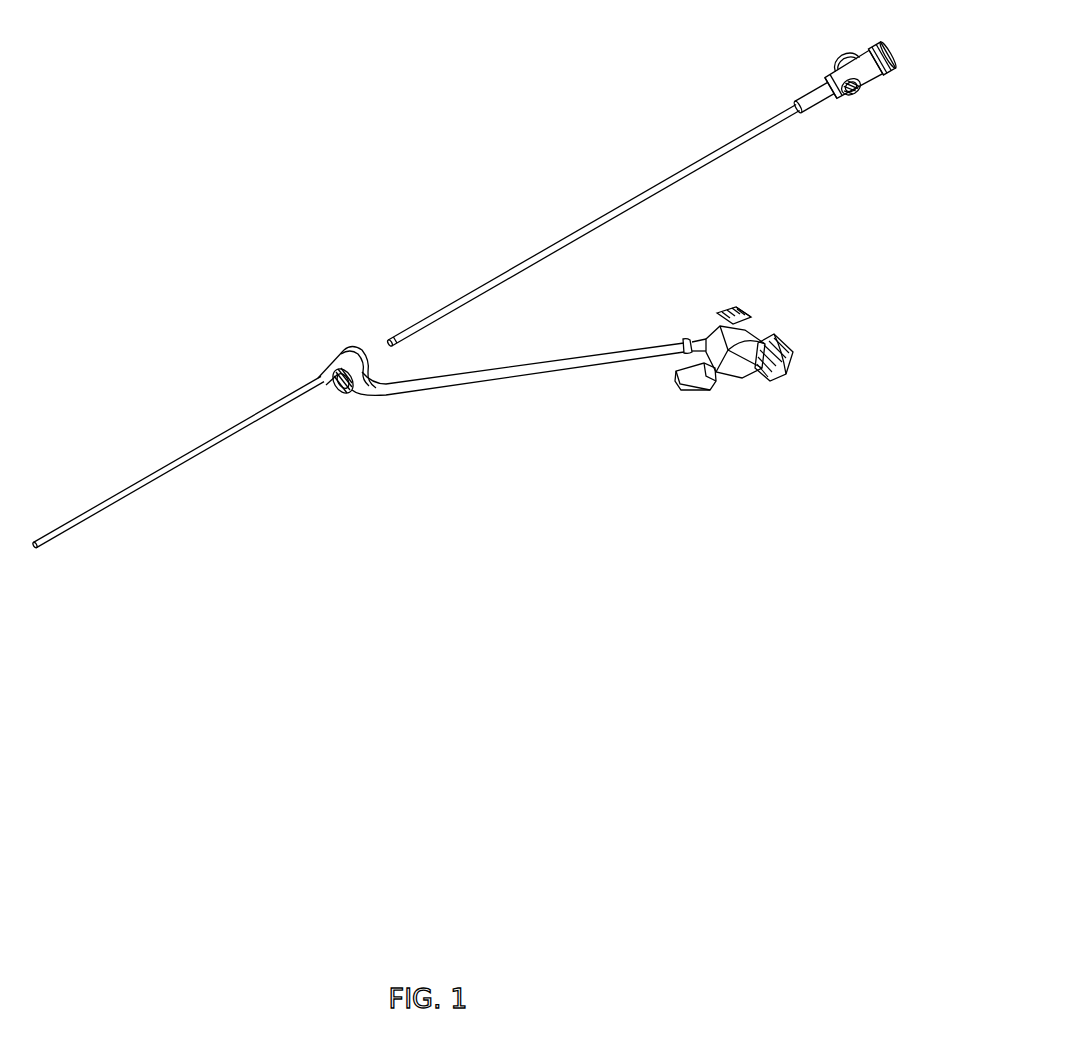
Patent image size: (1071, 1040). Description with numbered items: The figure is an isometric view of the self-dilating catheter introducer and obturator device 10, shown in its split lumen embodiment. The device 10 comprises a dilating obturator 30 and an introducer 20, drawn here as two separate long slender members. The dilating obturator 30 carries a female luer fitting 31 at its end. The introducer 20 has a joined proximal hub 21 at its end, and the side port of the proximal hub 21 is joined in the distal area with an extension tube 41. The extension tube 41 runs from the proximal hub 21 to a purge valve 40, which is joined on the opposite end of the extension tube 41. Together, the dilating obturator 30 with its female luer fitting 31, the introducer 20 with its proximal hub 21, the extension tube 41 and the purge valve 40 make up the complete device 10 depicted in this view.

The self-dilating catheter introducer and obturator device 10 is at (470, 203).
The introducer 20 is at (220, 438).
The proximal hub 21 is at (342, 350).
The dilating obturator 30 is at (722, 142).
The female luer fitting 31 is at (860, 50).
The purge valve 40 is at (768, 321).
The extension tube 41 is at (594, 366).